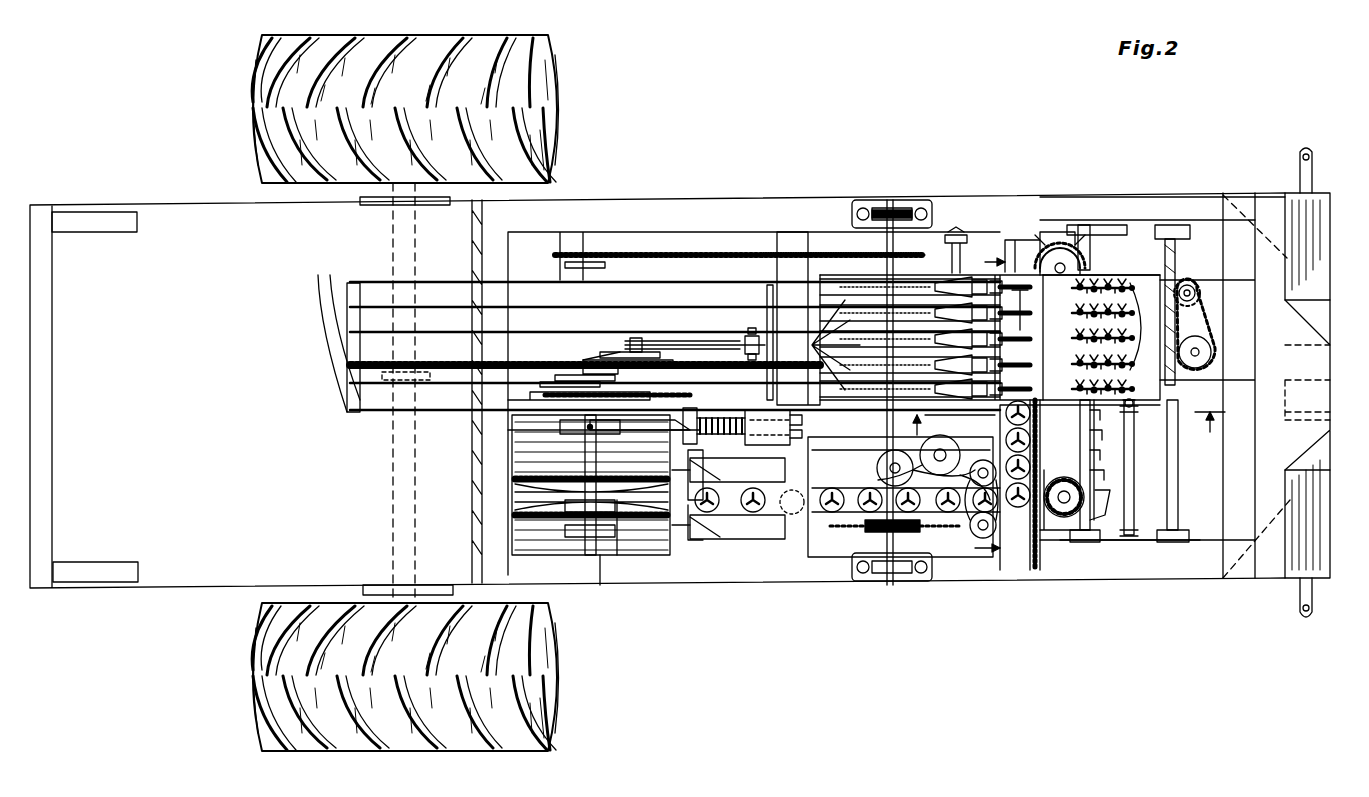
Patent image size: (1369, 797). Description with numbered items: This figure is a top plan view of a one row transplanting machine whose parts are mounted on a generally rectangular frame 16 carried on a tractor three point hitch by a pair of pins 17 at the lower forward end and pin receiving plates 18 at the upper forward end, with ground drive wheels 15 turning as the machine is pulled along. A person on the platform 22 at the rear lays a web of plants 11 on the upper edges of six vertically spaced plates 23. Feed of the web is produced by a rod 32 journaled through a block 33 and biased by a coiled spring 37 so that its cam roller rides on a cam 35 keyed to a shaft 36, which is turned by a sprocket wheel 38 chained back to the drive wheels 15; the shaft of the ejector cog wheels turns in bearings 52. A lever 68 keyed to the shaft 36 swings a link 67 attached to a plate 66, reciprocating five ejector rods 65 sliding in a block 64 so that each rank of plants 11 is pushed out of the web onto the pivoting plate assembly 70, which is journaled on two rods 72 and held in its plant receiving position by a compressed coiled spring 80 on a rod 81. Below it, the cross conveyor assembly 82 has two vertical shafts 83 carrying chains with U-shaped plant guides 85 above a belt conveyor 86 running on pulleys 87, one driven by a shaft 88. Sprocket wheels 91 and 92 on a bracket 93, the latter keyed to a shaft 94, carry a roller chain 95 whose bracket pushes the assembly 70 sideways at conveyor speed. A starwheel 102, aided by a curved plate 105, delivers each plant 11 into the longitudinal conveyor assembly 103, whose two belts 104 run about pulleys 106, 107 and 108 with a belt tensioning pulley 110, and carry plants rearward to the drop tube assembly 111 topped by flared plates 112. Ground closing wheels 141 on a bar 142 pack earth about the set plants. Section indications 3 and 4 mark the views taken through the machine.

The section line 3- 3 is at (1067, 434).
The section line 4- 4 is at (982, 406).
The plants 11 is at (1102, 337).
The ground drive wheels 15 is at (250, 86).
The frame 16 is at (1190, 568).
The pins 17 is at (1312, 168).
The pin receiving plates 18 is at (1331, 383).
The platform 22 is at (226, 562).
The plates 23 is at (330, 280).
The rod 32 is at (690, 410).
The block 33 is at (765, 440).
The cam 35 is at (615, 425).
The shaft 36 is at (590, 498).
The coiled spring 37 is at (717, 418).
The sprocket wheel 38 is at (515, 420).
The bearings 52 is at (887, 205).
The block 64 is at (790, 290).
The ejector rods 65 is at (812, 345).
The plate 66 is at (767, 292).
The link 67 is at (675, 343).
The lever 68 is at (605, 345).
The pivoting plate assembly 70 is at (1100, 250).
The rods 72 is at (1082, 468).
The compressed coiled spring 80 is at (1133, 408).
The rod 81 is at (1134, 466).
The cross conveyor assembly 82 is at (1050, 512).
The vertical shafts 83 is at (1060, 263).
The plant guides 85 is at (1108, 498).
The belt conveyor 86 is at (1038, 235).
The pulleys 87 is at (1005, 242).
The shaft 88 is at (968, 250).
The sprocket wheel 91 is at (1195, 293).
The sprocket wheel 92 is at (1205, 365).
The bracket 93 is at (1250, 283).
The shaft 94 is at (1198, 350).
The roller chain 95 is at (1210, 322).
The starwheel 102 is at (985, 460).
The longitudinal conveyor assembly 103 is at (815, 545).
The belts 104 is at (862, 452).
The curved plate 105 is at (1022, 545).
The pulleys 106 is at (985, 545).
The pulleys 107 is at (722, 478).
The pulleys 108 is at (877, 468).
The belt tensioning pulley 110 is at (960, 435).
The drop tube assembly 111 is at (690, 545).
The flared plates 112 is at (693, 460).
The ground closing wheels 141 is at (625, 560).
The bar 142 is at (598, 560).